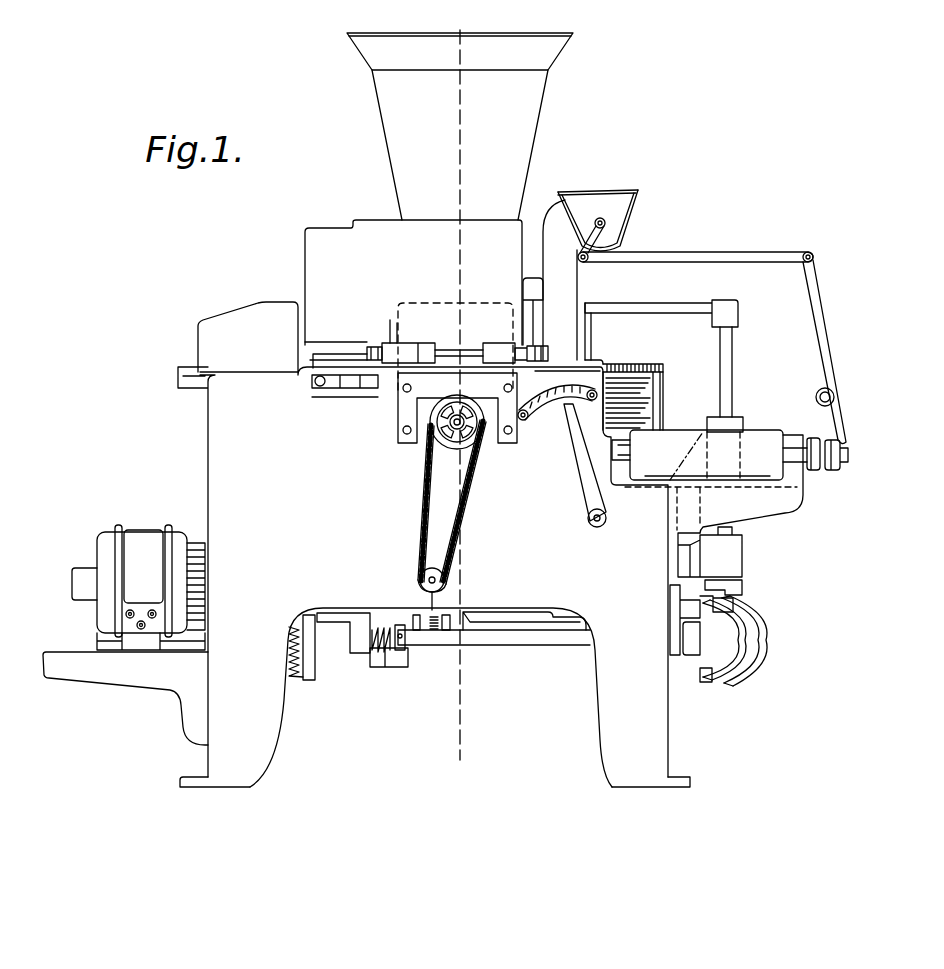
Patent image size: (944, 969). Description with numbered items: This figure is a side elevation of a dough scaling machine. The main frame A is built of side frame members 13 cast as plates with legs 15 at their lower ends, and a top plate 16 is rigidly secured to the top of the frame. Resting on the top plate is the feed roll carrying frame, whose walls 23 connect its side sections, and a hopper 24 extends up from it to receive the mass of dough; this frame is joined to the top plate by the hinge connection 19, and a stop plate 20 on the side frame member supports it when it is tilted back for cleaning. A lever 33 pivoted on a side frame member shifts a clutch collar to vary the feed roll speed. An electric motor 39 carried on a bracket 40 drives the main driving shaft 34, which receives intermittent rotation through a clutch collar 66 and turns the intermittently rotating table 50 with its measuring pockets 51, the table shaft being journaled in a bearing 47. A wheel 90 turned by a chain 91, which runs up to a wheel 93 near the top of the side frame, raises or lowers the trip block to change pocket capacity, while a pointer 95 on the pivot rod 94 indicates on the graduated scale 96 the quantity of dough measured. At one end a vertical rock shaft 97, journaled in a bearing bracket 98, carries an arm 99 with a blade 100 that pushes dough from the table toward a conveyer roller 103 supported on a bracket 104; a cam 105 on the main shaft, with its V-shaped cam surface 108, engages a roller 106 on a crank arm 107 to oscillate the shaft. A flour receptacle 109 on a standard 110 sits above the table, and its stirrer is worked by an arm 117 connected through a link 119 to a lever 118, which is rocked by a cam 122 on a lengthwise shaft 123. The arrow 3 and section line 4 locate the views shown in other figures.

The arrow 3 is at (900, 385).
The section line 4 is at (448, 31).
The side frame members 13 is at (423, 544).
The legs 15 is at (435, 754).
The top plate 16 is at (604, 357).
The hinge connection 19 is at (500, 345).
The stop plate 20 is at (400, 400).
The walls 23 is at (424, 294).
The hopper 24 is at (460, 126).
The lever 33 is at (342, 392).
The main driving shaft 34 is at (535, 640).
The electric motor 39 is at (138, 587).
The bracket 40 is at (147, 673).
The bearing 47 is at (527, 312).
The intermittently rotating table 50 is at (648, 364).
The measuring pockets 51 is at (633, 401).
The clutch collar 66 is at (307, 659).
The wheel 90 is at (445, 578).
The chain 91 is at (468, 500).
The pulley 93 is at (438, 437).
The pivot rod 94 is at (596, 528).
The pointer 95 is at (585, 485).
The graduated scale 96 is at (552, 411).
The vertical rock shaft 97 is at (733, 377).
The bearing bracket 98 is at (745, 420).
The arm 99 is at (686, 305).
The blade 100 is at (593, 332).
The roller 103 is at (697, 455).
The bracket 104 is at (800, 505).
The cam 105 is at (717, 675).
The roller 106 is at (738, 608).
The crank arm 107 is at (746, 591).
The V-shaped cam surface 108 is at (760, 648).
The flour receptacle 109 is at (642, 220).
The standard 110 is at (560, 280).
The arm 117 is at (585, 245).
The lever 118 is at (826, 330).
The link 119 is at (780, 252).
The cam 122 is at (843, 470).
The shaft 123 is at (850, 454).
The main frame A is at (218, 445).